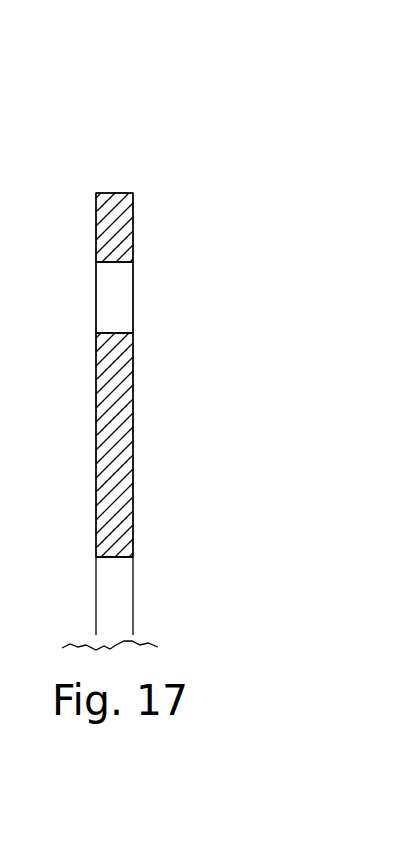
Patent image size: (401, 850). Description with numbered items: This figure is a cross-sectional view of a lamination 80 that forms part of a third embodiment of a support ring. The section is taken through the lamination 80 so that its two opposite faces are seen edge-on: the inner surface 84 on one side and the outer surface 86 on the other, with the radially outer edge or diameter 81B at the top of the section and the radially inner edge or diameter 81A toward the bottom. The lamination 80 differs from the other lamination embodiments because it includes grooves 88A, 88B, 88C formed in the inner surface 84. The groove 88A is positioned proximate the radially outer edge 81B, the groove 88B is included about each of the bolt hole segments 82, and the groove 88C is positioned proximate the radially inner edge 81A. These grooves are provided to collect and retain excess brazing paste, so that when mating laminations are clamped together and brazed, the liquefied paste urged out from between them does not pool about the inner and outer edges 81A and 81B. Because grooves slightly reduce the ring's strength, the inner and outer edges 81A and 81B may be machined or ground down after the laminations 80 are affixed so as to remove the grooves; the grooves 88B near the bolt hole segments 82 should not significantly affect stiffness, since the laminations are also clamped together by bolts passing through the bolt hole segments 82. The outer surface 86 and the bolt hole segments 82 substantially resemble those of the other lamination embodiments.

The lamination 80 is at (175, 112).
The radially inner edge 81A is at (118, 557).
The radially outer edge 81B is at (108, 191).
The bolt hole segment 82 is at (95, 287).
The inner surface 84 is at (135, 437).
The outer surface 86 is at (94, 423).
The groove 88A is at (135, 203).
The groove 88B is at (135, 345).
The groove 88C is at (190, 544).